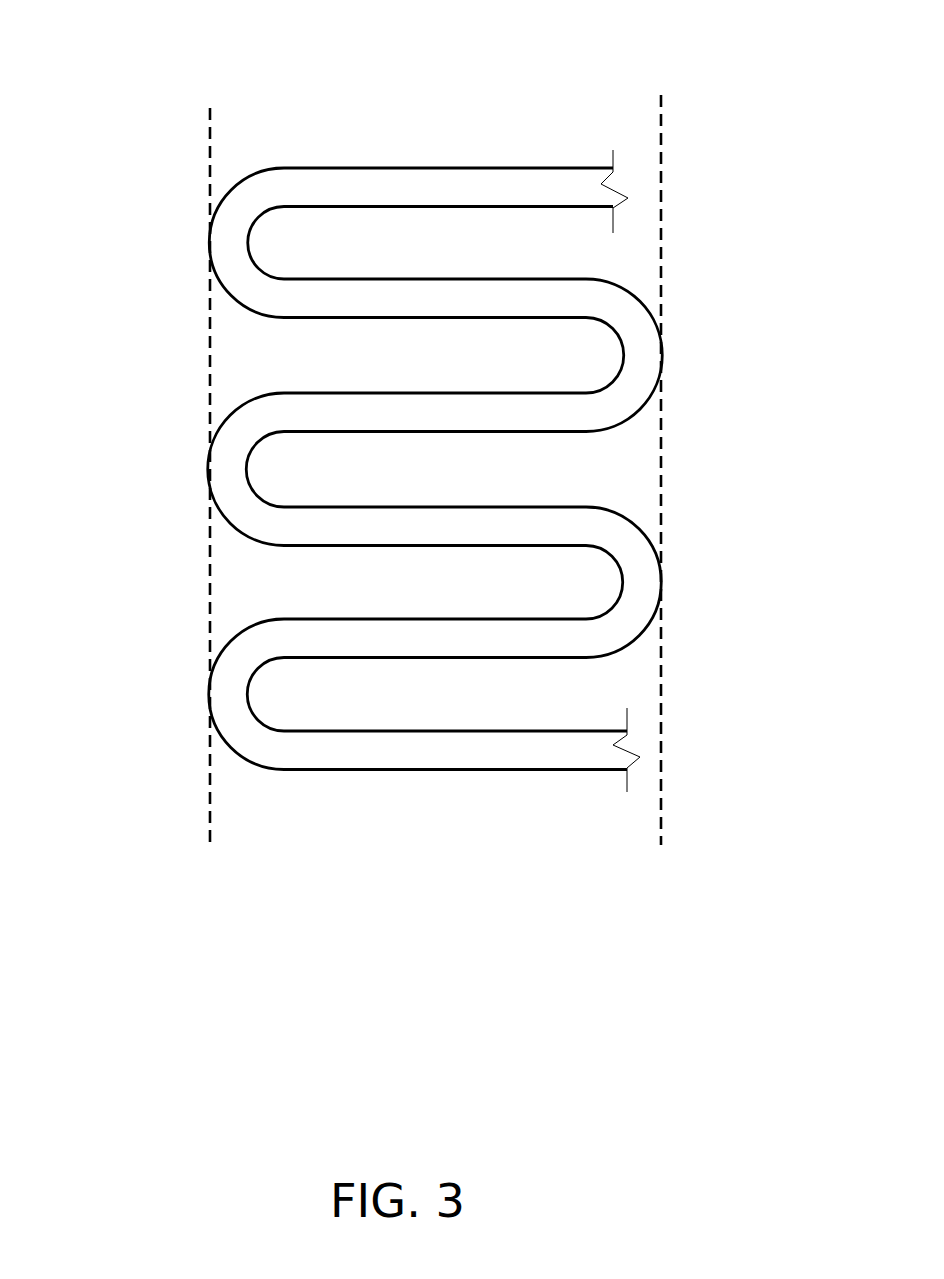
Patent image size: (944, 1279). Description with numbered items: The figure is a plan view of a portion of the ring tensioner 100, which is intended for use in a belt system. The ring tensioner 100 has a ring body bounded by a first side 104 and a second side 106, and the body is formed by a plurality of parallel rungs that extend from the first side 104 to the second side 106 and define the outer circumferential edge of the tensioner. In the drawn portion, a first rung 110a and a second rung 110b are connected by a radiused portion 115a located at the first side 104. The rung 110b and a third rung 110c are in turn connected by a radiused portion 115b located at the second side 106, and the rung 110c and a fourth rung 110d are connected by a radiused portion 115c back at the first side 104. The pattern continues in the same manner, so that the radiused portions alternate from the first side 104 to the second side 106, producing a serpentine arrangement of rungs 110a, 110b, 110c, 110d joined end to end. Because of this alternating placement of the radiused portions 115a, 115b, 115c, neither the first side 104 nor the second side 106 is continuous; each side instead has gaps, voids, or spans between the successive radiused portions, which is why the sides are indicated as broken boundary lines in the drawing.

The ring tensioner 100 is at (249, 62).
The first side 104 is at (210, 353).
The second side 106 is at (662, 458).
The rung 110a is at (448, 168).
The rung 110b is at (553, 278).
The rung 110c is at (480, 430).
The rung 110d is at (368, 546).
The radiused portion 115a is at (210, 238).
The radiused portion 115b is at (662, 347).
The radiused portion 115c is at (210, 476).